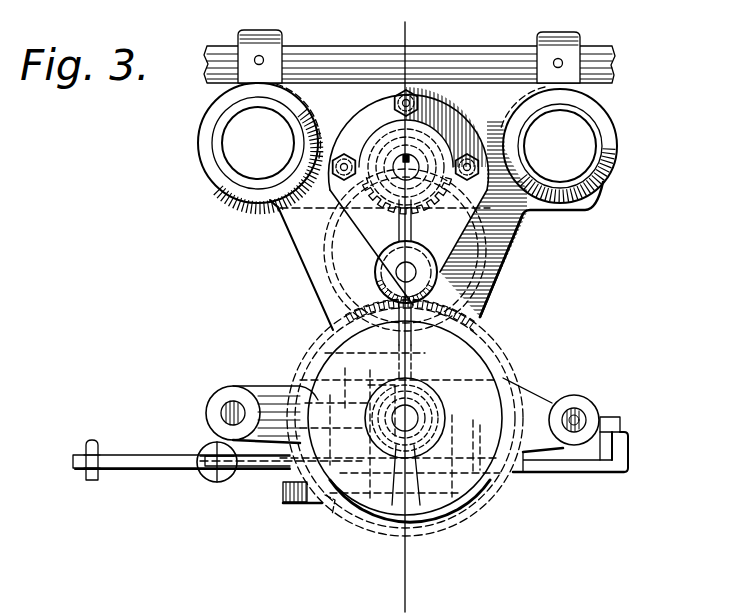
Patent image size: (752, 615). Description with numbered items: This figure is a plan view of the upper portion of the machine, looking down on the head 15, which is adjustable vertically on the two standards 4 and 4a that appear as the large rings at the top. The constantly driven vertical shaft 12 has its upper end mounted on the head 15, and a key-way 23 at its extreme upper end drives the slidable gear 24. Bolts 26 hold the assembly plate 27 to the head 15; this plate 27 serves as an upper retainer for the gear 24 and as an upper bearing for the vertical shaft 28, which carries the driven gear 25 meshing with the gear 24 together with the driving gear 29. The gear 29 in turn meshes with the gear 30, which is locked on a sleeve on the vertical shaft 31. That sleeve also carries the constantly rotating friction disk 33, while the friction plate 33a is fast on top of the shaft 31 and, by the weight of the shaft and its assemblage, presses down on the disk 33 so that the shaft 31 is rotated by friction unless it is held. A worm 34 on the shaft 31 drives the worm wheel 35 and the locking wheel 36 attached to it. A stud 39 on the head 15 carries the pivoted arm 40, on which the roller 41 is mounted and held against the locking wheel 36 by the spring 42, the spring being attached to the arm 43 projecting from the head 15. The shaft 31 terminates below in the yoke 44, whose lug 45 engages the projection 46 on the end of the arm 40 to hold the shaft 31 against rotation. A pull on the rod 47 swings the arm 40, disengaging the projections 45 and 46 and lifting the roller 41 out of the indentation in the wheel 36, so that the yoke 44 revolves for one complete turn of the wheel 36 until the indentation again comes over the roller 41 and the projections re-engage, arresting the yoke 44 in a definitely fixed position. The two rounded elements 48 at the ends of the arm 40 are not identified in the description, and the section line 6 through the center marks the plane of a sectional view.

The standard 4 is at (222, 152).
The standard 4a is at (600, 135).
The section line 6 is at (428, 27).
The vertical shaft 12 is at (400, 160).
The head 15 is at (511, 249).
The key-way 23 is at (409, 160).
The gear 24 is at (383, 178).
The driven gear 25 is at (478, 262).
The bolts 26 is at (395, 102).
The assembly plate 27 is at (404, 215).
The vertical shaft 28 is at (378, 276).
The driving gear 29 is at (474, 302).
The gear 30 is at (503, 350).
The vertical shaft 31 is at (418, 412).
The friction disk 33 is at (417, 507).
The friction plate 33a is at (448, 508).
The worm 34 is at (414, 448).
The worm wheel 35 is at (303, 387).
The locking wheel 36 is at (288, 505).
The stud 39 is at (500, 494).
The arm 40 is at (142, 468).
The roller 41 is at (332, 516).
The spring 42 is at (205, 448).
The arm 43 is at (250, 466).
The yoke 44 is at (577, 418).
The lug 45 is at (616, 416).
The projection 46 is at (630, 447).
The rod 47 is at (91, 442).
The boss 48 is at (229, 410).